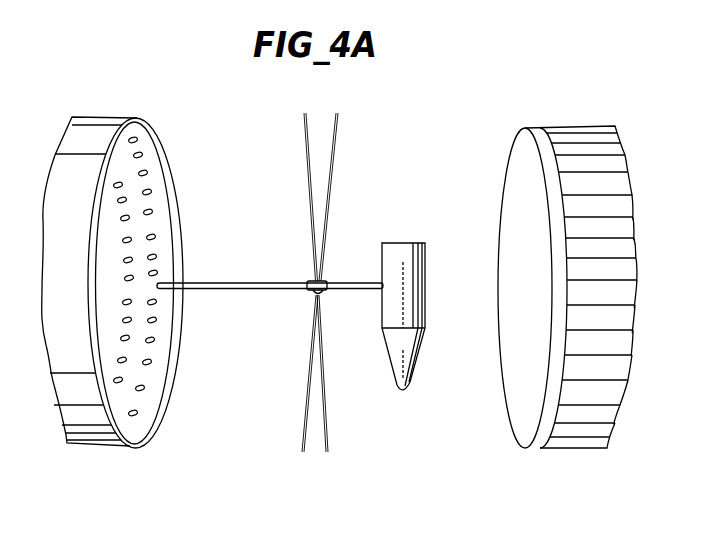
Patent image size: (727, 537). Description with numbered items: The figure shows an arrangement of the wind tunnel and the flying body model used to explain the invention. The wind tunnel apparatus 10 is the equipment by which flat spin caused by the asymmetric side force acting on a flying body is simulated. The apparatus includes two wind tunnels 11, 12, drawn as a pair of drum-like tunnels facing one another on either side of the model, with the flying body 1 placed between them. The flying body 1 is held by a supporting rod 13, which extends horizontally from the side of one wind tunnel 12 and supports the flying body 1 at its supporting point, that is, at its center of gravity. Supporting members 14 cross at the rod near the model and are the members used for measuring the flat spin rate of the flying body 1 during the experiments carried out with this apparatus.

The wind tunnel apparatus 10 is at (428, 158).
The flying body 1 is at (422, 243).
The wind tunnel 11 is at (518, 440).
The wind tunnel 12 is at (107, 440).
The supporting rod 13 is at (262, 281).
The supporting members 14 is at (330, 167).